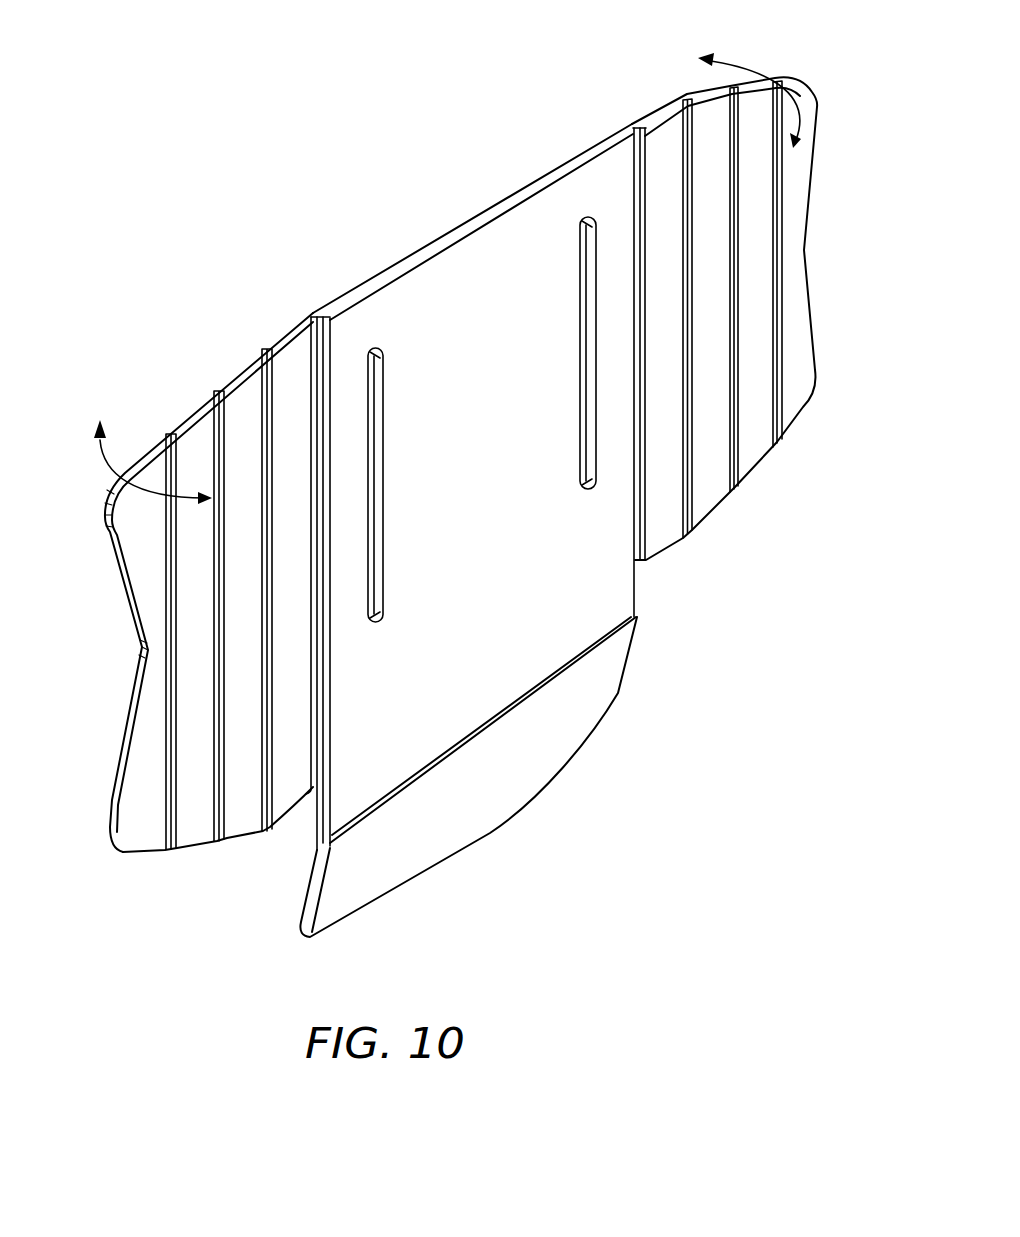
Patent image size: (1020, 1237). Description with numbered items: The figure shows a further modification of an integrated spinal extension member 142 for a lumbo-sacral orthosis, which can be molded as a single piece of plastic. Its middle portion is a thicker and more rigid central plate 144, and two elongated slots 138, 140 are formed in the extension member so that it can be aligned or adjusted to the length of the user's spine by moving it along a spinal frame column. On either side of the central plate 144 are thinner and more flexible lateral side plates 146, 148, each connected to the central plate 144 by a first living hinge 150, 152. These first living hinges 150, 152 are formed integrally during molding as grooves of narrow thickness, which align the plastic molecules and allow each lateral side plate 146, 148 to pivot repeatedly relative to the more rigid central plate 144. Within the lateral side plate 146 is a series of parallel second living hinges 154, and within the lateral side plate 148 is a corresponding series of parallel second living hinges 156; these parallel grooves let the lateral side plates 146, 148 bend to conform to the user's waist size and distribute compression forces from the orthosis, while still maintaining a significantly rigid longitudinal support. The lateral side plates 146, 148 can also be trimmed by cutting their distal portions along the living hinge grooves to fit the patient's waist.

The elongated slot 138 is at (376, 497).
The elongated slot 140 is at (590, 323).
The integrated spinal extension member 142 is at (448, 215).
The central plate 144 is at (610, 600).
The lateral side plate 146 is at (148, 845).
The lateral side plate 148 is at (795, 404).
The first living hinge 150 is at (311, 313).
The first living hinge 152 is at (628, 120).
The second living hinges 154 is at (260, 344).
The second living hinges 156 is at (688, 93).